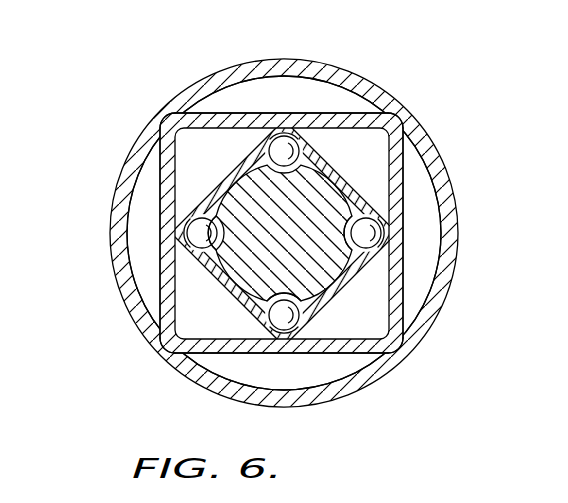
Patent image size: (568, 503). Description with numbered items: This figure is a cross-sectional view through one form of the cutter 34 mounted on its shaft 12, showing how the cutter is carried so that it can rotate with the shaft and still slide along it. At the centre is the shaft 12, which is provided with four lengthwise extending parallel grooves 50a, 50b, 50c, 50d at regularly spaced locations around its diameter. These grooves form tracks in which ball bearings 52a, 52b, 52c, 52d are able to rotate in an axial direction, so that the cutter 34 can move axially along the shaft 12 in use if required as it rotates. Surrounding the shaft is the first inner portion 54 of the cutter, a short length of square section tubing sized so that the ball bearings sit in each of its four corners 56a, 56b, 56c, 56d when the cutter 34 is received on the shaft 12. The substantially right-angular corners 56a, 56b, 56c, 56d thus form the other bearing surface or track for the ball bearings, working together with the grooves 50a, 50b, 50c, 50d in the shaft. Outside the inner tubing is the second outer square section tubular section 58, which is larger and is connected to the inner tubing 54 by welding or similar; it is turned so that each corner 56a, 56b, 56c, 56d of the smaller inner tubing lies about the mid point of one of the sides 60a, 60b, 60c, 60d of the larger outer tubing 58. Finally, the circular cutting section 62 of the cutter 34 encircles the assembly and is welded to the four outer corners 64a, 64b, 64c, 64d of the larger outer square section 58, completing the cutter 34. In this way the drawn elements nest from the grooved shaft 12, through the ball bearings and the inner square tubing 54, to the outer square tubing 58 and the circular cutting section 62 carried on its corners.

The shaft 12 is at (310, 197).
The cutter 34 is at (392, 90).
The groove 50a is at (228, 213).
The groove 50b is at (340, 212).
The groove 50c is at (300, 298).
The groove 50d is at (228, 253).
The ball bearing 52a is at (288, 136).
The ball bearing 52b is at (378, 243).
The ball bearing 52c is at (298, 322).
The ball bearing 52d is at (187, 229).
The first inner portion 54 is at (243, 163).
The corner 56a is at (283, 134).
The corner 56b is at (383, 230).
The corner 56c is at (256, 353).
The corner 56d is at (185, 243).
The second outer square section tubular section 58 is at (150, 161).
The side 60a is at (335, 114).
The side 60b is at (401, 278).
The side 60c is at (215, 353).
The side 60d is at (172, 307).
The circular cutting section 62 is at (147, 127).
The outer corner 64a is at (395, 132).
The outer corner 64b is at (392, 325).
The outer corner 64c is at (177, 337).
The outer corner 64d is at (177, 130).